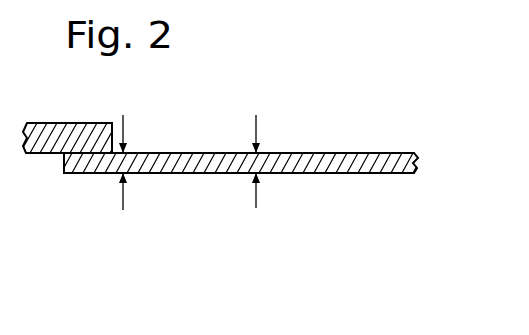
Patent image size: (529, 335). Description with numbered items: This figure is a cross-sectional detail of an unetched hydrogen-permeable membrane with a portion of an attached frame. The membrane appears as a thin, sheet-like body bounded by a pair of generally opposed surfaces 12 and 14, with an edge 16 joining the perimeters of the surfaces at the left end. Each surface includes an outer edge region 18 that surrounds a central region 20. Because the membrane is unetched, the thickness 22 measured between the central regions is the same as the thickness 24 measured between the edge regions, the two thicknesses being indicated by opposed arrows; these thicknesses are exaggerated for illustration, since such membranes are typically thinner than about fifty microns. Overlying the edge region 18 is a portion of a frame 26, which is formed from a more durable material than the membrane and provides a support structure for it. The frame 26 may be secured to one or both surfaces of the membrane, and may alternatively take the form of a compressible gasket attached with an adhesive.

The surface 12 is at (380, 151).
The surface 14 is at (380, 175).
The edge 16 is at (64, 165).
The outer edge region 18 is at (76, 124).
The central region 20 is at (238, 151).
The thickness 22 is at (256, 190).
The thickness 24 is at (123, 185).
The frame 26 is at (67, 123).